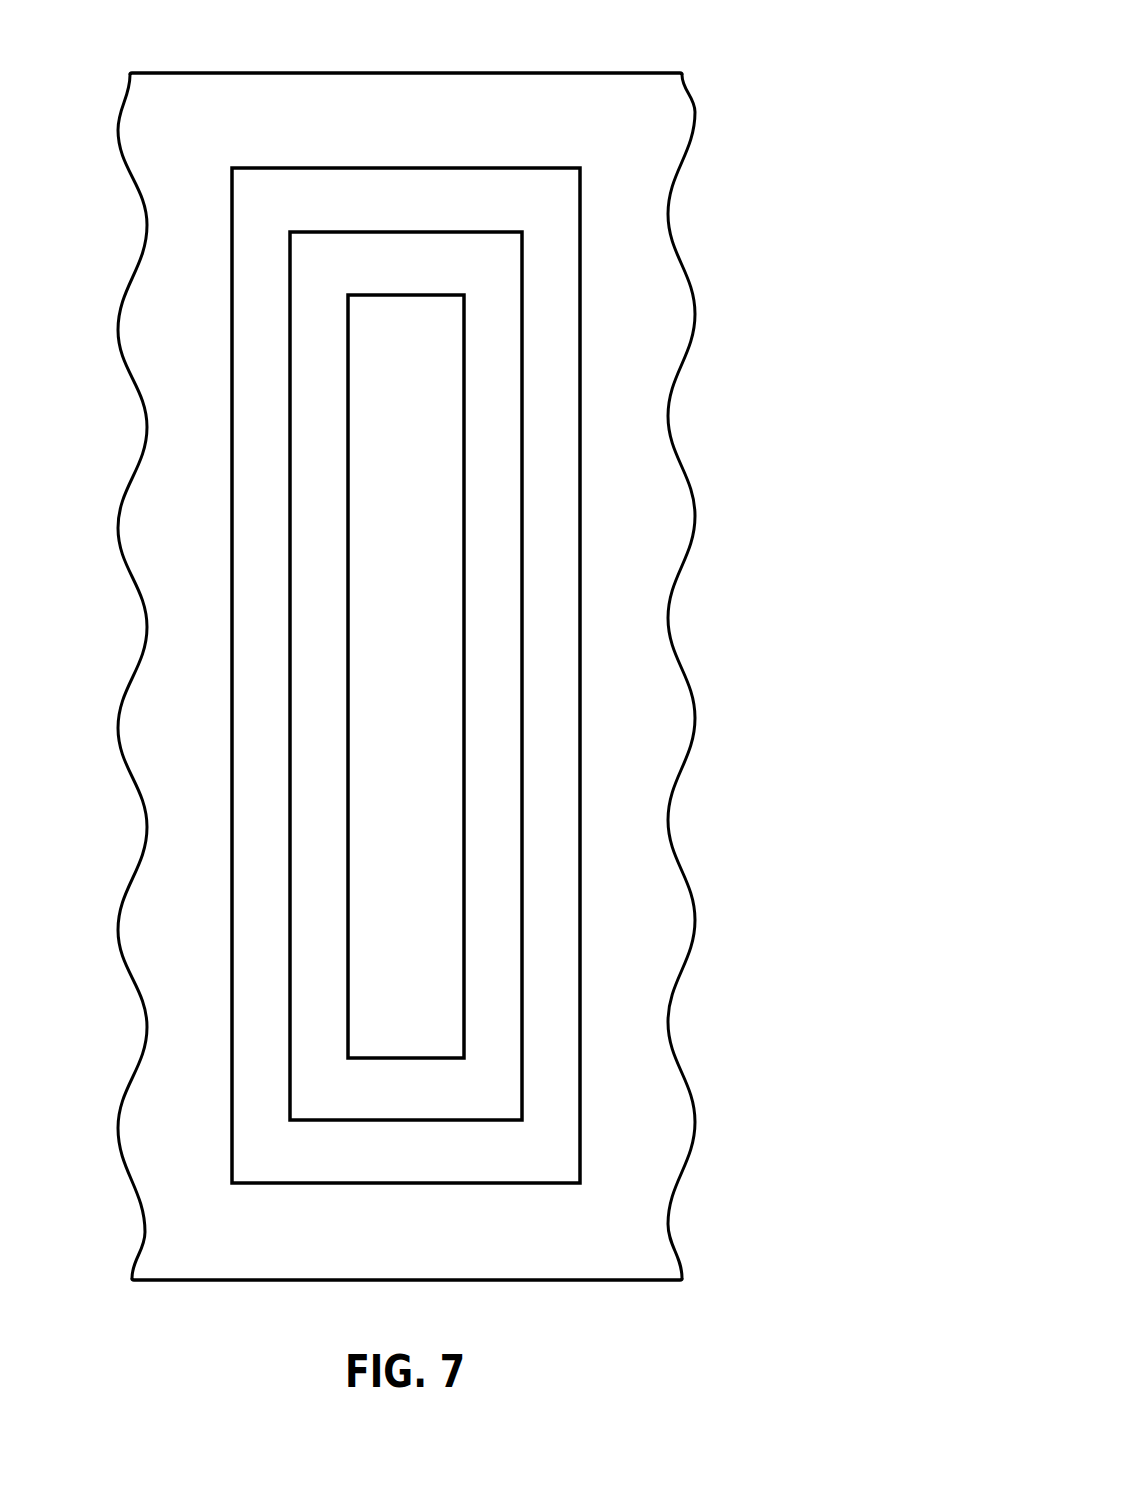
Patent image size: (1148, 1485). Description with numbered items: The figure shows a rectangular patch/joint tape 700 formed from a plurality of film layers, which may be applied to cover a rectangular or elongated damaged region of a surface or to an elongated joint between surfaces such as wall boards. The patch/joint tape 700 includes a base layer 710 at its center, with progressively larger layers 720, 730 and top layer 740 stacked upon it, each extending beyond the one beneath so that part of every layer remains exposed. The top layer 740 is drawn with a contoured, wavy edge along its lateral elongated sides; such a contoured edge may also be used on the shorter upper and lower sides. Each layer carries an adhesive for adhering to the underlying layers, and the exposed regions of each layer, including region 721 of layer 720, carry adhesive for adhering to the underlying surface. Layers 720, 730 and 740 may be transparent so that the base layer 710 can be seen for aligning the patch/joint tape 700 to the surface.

The patch/joint tape 700 is at (505, 646).
The base layer 710 is at (428, 295).
The layer 720 is at (478, 232).
The region 721 is at (548, 688).
The layer 730 is at (523, 168).
The top layer 740 is at (595, 73).